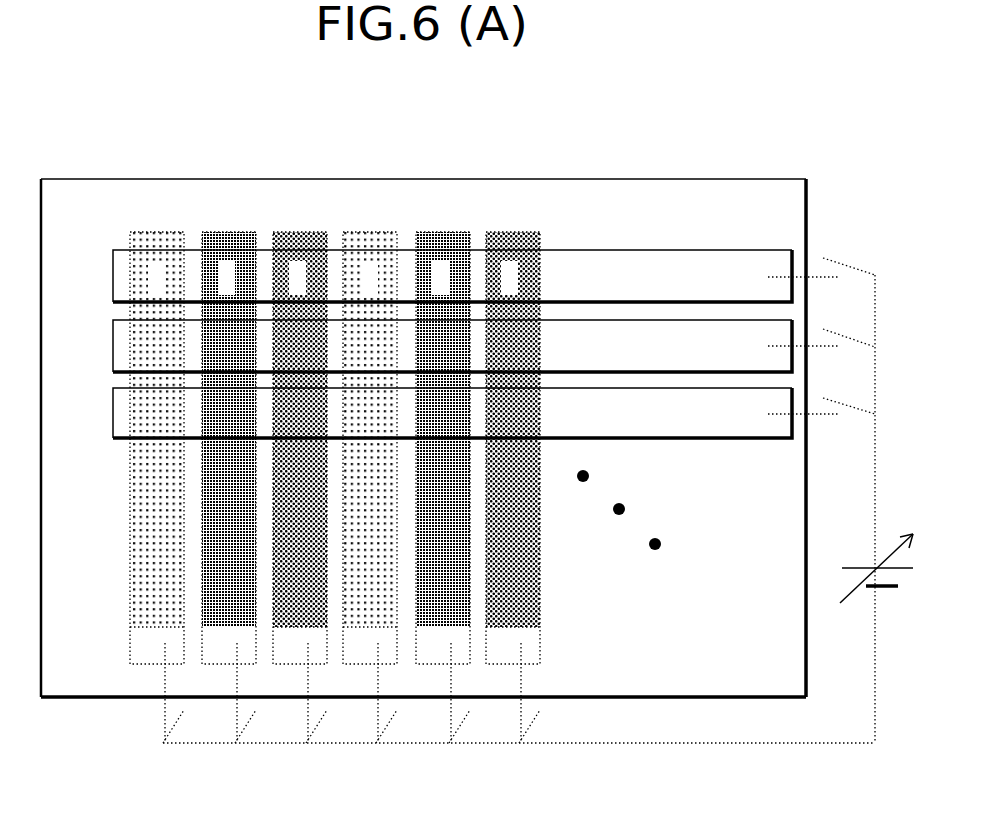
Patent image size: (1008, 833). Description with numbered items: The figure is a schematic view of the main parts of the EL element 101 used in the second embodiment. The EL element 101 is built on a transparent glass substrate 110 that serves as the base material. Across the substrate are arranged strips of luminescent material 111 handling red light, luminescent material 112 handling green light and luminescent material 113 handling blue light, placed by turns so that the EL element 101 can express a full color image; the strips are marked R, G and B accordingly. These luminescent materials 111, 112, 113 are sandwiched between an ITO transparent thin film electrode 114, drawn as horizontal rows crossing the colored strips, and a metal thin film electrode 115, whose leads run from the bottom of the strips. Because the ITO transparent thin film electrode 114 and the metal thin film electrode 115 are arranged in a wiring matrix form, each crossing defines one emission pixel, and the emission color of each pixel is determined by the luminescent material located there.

The EL element 101 is at (560, 179).
The transparent glass substrate 110 is at (499, 433).
The luminescent material 111 is at (167, 255).
The luminescent material 112 is at (230, 255).
The luminescent material 113 is at (305, 255).
The ITO transparent thin film electrode 114 is at (722, 260).
The metal thin film electrode 115 is at (138, 651).